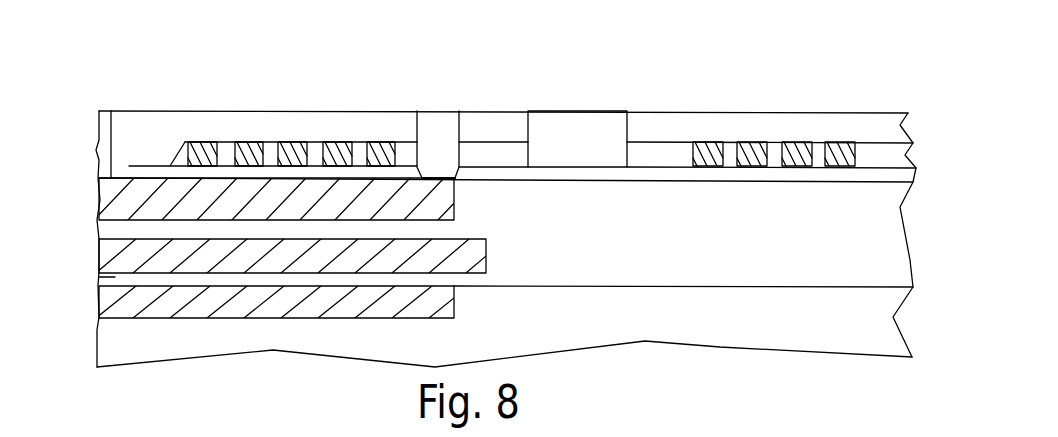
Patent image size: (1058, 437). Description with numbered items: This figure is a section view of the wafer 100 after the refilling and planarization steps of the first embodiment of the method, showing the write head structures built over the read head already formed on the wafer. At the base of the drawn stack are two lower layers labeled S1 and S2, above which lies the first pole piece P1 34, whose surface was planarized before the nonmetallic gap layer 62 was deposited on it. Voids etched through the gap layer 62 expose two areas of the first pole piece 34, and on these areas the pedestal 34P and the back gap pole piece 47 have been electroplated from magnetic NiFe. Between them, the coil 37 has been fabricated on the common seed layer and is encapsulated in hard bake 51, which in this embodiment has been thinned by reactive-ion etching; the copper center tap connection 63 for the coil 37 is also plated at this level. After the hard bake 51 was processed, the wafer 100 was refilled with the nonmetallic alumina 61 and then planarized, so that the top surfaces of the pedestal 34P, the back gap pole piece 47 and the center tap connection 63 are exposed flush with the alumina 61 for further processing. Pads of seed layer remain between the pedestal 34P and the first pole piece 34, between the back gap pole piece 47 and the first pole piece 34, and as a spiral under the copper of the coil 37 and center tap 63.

The wafer 100 is at (878, 90).
The pedestal 34P is at (103, 130).
The first pole piece P1 34 is at (105, 199).
The coil 37 is at (295, 148).
The back gap pole piece 47 is at (435, 122).
The hard bake 51 is at (672, 160).
The alumina 61 is at (167, 120).
The gap layer 62 is at (520, 173).
The center tap connection 63 is at (585, 123).
The first substrate layer S1 is at (102, 300).
The second substrate layer S2 is at (102, 255).